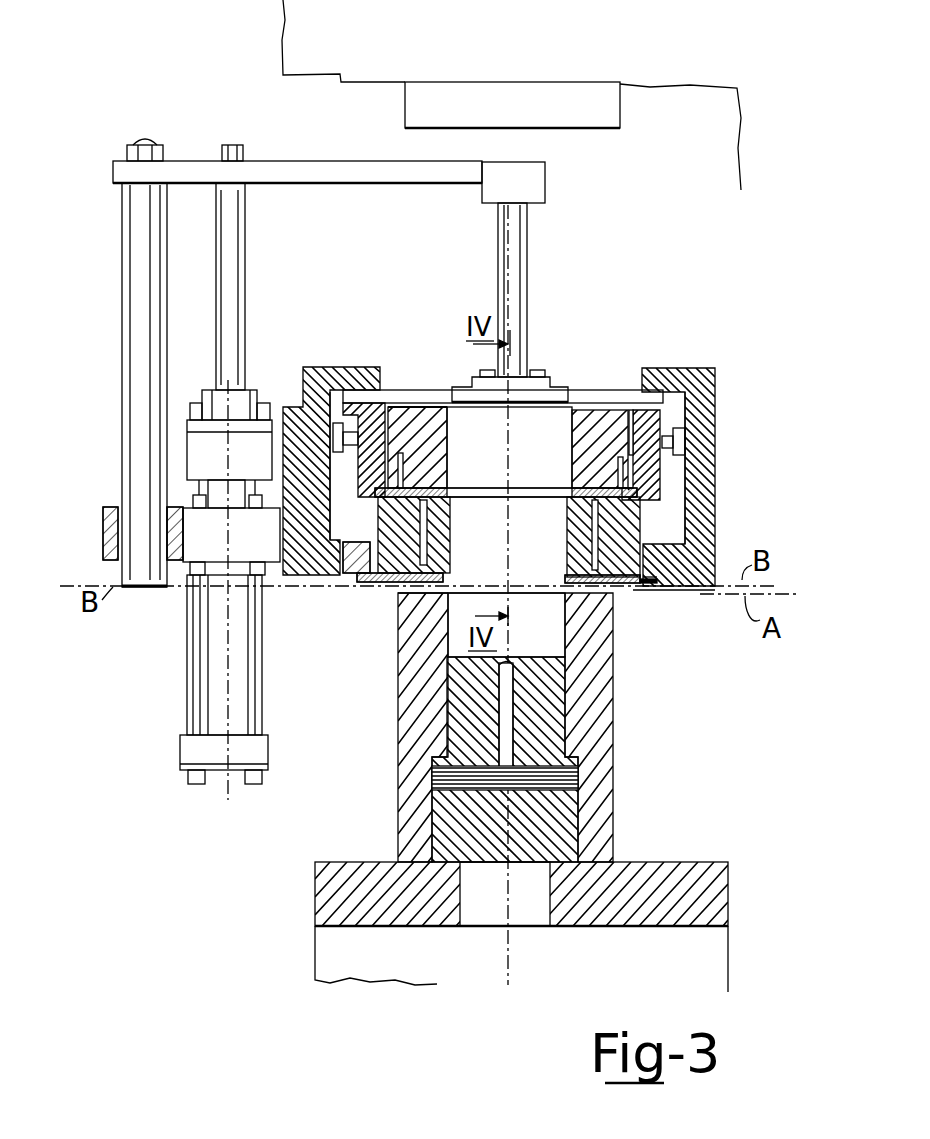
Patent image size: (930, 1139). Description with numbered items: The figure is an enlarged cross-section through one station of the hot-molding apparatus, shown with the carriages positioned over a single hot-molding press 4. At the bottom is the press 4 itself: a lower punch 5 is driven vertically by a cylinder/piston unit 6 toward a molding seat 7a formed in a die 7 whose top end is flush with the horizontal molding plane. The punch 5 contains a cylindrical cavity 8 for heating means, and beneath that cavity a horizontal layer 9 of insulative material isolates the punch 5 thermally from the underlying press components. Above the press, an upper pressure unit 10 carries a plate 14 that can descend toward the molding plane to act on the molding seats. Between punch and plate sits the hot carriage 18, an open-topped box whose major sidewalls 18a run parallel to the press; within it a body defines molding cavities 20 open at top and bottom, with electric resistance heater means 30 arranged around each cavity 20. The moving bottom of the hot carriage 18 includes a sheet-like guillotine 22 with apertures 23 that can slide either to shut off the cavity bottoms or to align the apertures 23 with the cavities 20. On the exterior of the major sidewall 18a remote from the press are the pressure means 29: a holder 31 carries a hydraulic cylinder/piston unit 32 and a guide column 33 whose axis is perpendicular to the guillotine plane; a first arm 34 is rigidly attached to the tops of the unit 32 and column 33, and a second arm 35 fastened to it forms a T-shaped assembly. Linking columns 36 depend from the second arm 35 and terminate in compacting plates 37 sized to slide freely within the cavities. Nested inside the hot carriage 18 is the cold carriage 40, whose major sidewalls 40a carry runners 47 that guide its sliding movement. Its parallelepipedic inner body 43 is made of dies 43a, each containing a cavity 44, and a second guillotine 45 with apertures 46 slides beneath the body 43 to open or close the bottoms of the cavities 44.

The single hot-molding press 4 is at (303, 952).
The lower punch 5 is at (550, 700).
The cylinder/piston unit 6 is at (526, 938).
The die 7 is at (598, 668).
The molding seat 7a is at (547, 640).
The cylindrical cavity 8 is at (505, 700).
The horizontal layer of insulative material 9 is at (448, 790).
The upper pressure unit 10 is at (536, 80).
The plate 14 is at (468, 98).
The hot carriage 18 is at (736, 380).
The major sidewall 18a is at (716, 465).
The molding cavity 20 is at (492, 548).
The guillotine 22 is at (655, 583).
The aperture 23 is at (445, 600).
The pressure means 29 is at (128, 126).
The heater means 30 is at (422, 572).
The holder 31 is at (105, 517).
The hydraulic cylinder/piston unit 32 is at (268, 324).
The guide column 33 is at (132, 375).
The first arm 34 is at (302, 172).
The second arm 35 is at (545, 180).
The connection or linking column 36 is at (512, 257).
The compacting plate 37 is at (535, 390).
The cold carriage 40 is at (598, 396).
The major sidewall 40a is at (668, 400).
The parallelepipedic inner body 43 is at (403, 398).
The die 43a is at (430, 403).
The cavity 44 is at (492, 456).
The guillotine 45 is at (645, 491).
The aperture 46 is at (545, 492).
The runner 47 is at (324, 432).